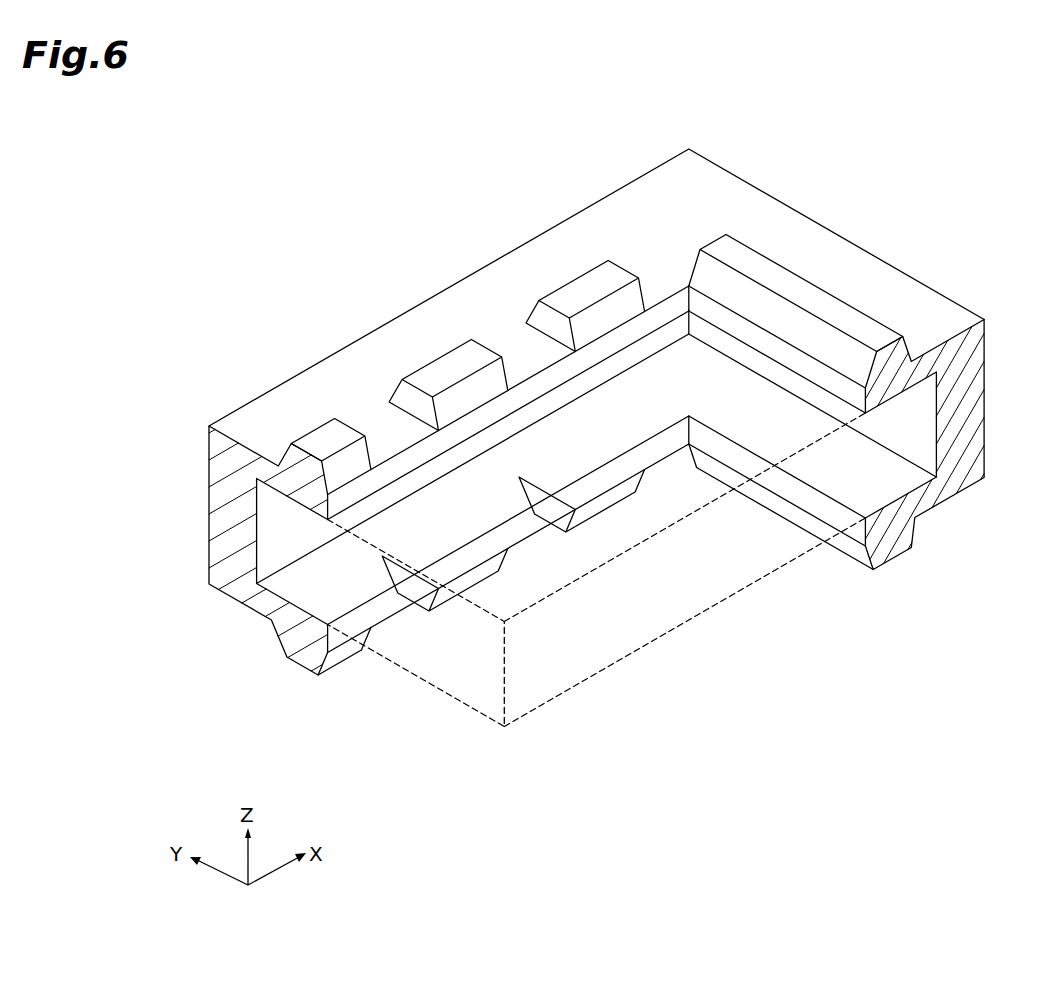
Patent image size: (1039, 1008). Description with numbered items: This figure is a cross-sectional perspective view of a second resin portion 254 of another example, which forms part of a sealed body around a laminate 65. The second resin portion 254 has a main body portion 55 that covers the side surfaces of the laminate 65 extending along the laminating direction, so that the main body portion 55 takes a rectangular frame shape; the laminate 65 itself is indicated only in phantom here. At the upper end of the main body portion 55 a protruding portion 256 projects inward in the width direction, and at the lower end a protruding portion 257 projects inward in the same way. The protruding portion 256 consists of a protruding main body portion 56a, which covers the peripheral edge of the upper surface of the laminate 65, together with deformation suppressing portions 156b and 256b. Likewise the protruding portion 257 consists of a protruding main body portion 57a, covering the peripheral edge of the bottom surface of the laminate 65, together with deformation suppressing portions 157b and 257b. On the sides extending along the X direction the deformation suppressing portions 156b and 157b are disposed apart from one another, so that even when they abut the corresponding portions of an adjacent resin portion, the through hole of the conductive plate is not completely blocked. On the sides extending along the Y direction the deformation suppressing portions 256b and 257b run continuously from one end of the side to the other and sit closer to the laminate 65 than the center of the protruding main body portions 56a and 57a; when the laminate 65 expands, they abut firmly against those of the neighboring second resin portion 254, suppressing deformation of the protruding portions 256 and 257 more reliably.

The second resin portion 254 is at (932, 165).
The main body portion 55 is at (221, 513).
The protruding main body portion 56a is at (482, 290).
The protruding main body portion 57a is at (386, 605).
The protruding portion 256 is at (323, 390).
The deformation suppressing portion 156b is at (440, 373).
The deformation suppressing portion 256b is at (830, 310).
The protruding portion 257 is at (262, 626).
The deformation suppressing portion 157b is at (442, 590).
The deformation suppressing portion 257b is at (851, 560).
The laminate 65 is at (654, 631).